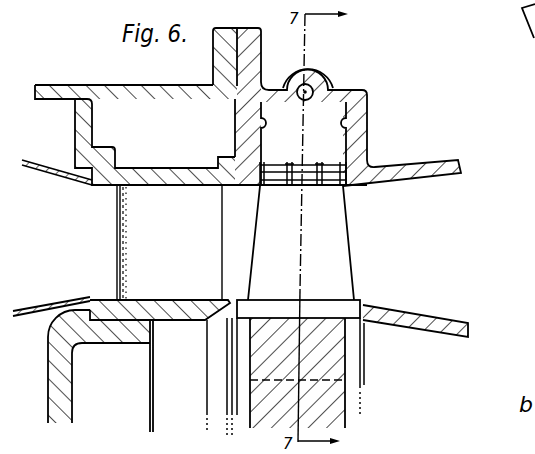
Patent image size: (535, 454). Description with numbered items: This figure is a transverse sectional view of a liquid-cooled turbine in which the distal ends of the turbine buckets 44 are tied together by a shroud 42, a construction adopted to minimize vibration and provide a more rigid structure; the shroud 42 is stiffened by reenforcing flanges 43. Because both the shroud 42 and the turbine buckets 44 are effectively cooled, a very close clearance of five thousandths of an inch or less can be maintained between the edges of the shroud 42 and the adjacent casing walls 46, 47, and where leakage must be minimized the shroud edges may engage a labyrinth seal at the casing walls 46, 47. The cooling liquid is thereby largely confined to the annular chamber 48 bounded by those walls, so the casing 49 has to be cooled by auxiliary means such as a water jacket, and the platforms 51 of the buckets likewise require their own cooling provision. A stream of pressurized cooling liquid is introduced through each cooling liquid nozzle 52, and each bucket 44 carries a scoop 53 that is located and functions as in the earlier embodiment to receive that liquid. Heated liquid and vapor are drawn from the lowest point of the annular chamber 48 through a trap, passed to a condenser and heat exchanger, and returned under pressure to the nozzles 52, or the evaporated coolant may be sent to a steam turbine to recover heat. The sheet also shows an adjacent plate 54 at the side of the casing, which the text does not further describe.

The shroud 42 is at (331, 188).
The reenforcing flanges 43 is at (288, 162).
The turbine buckets 44 is at (318, 258).
The casing wall 46 is at (235, 130).
The casing wall 47 is at (346, 128).
The annular chamber 48 is at (301, 133).
The casing 49 is at (217, 322).
The platforms 51 is at (319, 300).
The cooling liquid nozzle 52 is at (307, 91).
The scoop 53 is at (320, 187).
The cover plate 54 is at (424, 178).